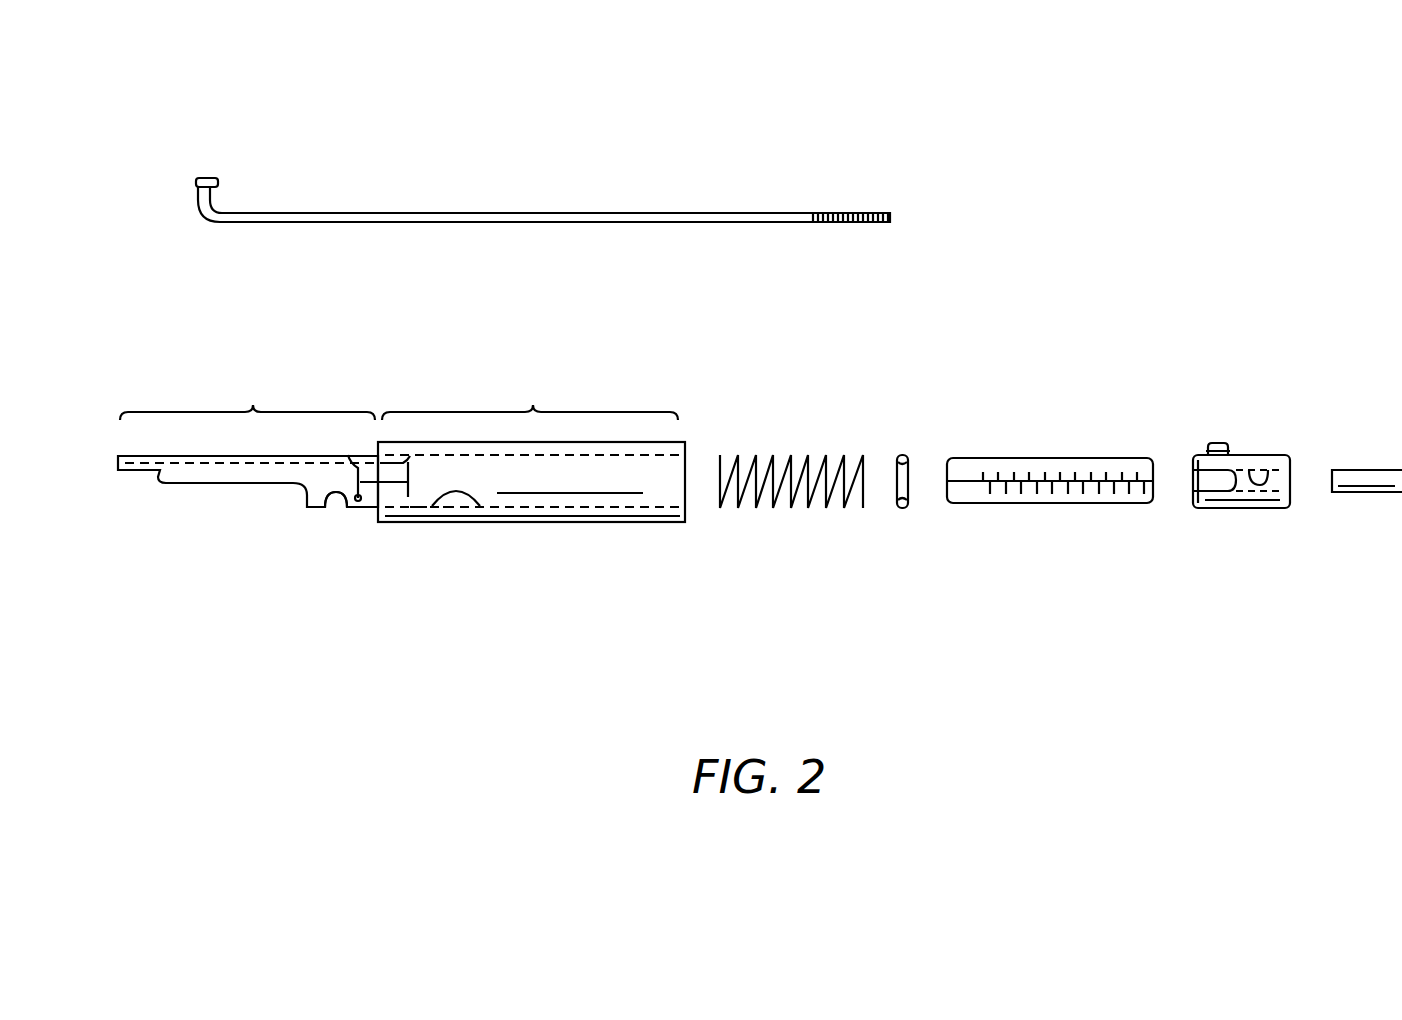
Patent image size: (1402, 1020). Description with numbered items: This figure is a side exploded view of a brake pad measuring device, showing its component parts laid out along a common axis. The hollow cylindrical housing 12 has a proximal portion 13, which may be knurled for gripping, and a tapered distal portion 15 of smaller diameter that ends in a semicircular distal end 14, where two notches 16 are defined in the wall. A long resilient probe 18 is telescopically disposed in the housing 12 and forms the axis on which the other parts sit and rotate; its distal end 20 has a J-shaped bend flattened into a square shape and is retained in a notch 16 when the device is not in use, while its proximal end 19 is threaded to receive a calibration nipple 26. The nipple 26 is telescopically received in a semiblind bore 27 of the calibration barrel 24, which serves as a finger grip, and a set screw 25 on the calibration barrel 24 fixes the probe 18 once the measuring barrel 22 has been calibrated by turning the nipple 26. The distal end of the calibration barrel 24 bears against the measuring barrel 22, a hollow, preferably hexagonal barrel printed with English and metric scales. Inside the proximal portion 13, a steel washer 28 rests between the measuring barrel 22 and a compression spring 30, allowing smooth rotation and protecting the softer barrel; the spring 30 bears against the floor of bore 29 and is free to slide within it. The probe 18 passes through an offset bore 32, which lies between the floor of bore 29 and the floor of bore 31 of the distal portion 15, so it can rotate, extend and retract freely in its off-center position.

The housing 12 is at (565, 522).
The proximal portion 13 is at (530, 395).
The distal end 14 is at (118, 455).
The distal portion 15 is at (247, 395).
The notches 16 is at (150, 472).
The probe 18 is at (527, 213).
The proximal end 19 is at (882, 212).
The distal end 20 is at (222, 200).
The measuring barrel 22 is at (1063, 503).
The calibration barrel 24 is at (1285, 455).
The set screw 25 is at (1207, 447).
The calibration nipple 26 is at (1390, 494).
The semiblind bore 27 is at (1262, 478).
The steel washer 28 is at (900, 506).
The bore 29 is at (440, 505).
The compression spring 30 is at (758, 497).
The bore 31 is at (320, 510).
The offset bore 32 is at (352, 466).